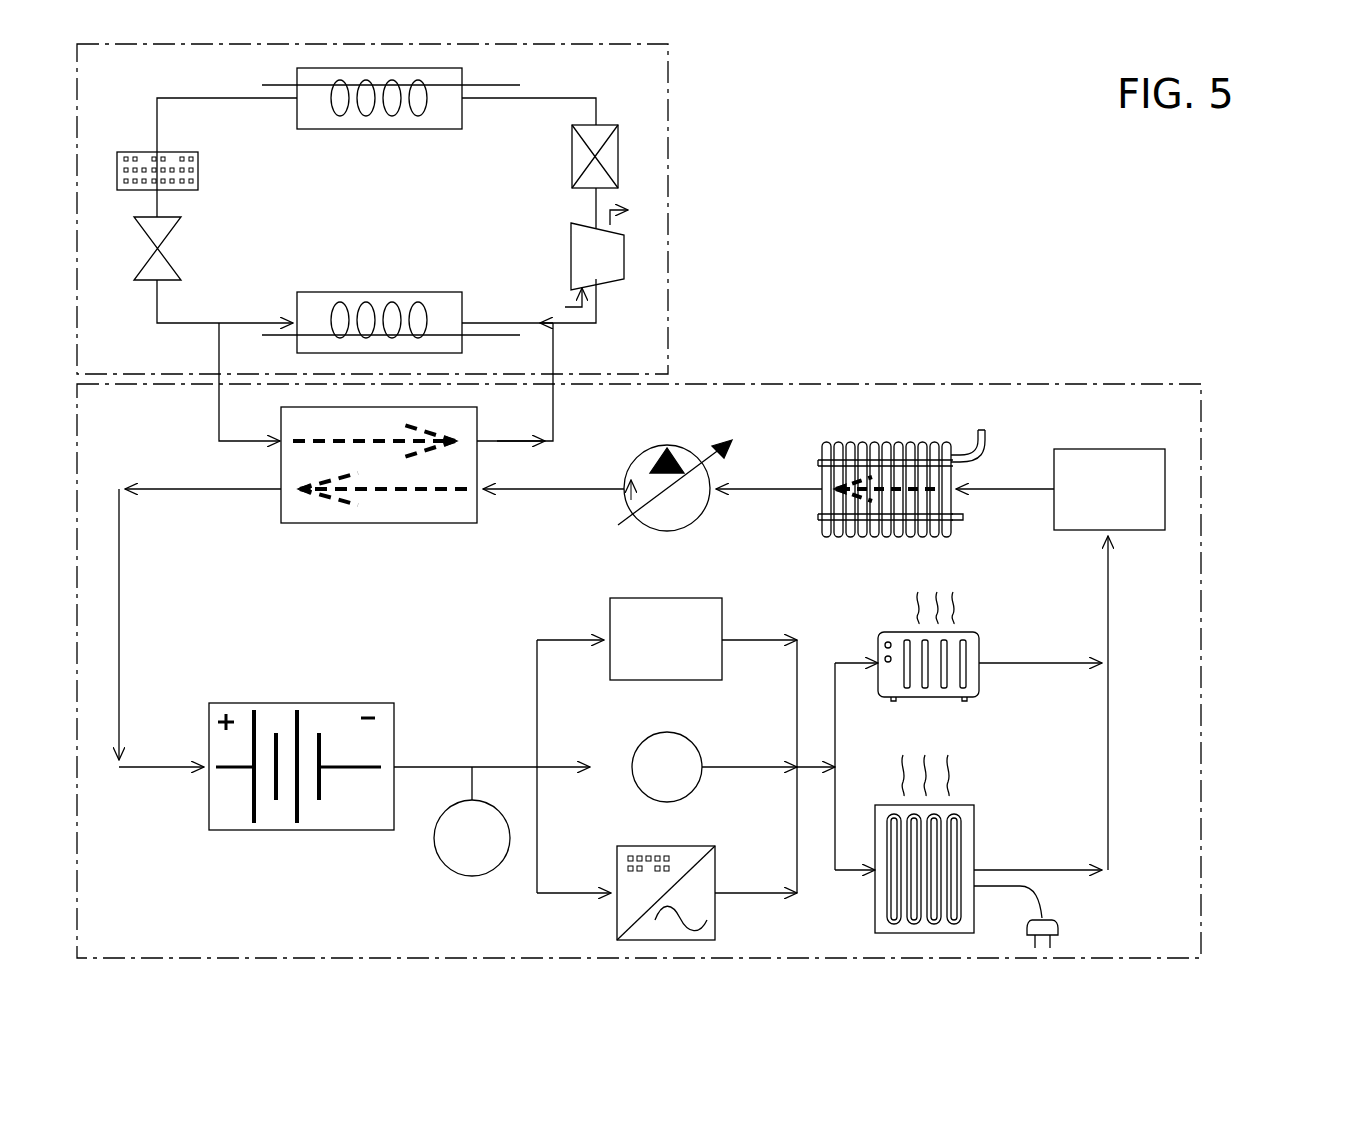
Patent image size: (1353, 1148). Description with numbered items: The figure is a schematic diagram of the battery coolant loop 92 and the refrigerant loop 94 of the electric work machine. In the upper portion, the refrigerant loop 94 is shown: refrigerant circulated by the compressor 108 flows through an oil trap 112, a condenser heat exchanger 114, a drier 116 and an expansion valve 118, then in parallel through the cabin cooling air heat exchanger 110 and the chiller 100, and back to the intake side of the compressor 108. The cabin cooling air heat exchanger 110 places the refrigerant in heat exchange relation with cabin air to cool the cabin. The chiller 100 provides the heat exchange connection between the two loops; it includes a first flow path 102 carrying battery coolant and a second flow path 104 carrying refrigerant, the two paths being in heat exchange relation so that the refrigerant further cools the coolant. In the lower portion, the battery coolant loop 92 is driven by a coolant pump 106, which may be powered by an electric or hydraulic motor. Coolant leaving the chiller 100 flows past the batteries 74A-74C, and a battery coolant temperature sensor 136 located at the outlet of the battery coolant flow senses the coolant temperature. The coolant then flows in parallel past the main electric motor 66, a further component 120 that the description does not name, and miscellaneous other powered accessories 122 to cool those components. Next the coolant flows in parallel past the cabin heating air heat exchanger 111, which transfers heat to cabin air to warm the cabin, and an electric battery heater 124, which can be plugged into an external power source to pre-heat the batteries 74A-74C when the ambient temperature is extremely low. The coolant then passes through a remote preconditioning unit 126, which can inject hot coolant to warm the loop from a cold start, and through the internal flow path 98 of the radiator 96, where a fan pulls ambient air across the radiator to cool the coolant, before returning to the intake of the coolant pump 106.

The battery coolant loop 92 is at (1212, 840).
The refrigerant loop 94 is at (718, 80).
The radiator 96 is at (908, 445).
The internal flow path 98 is at (878, 478).
The chiller 100 is at (355, 523).
The first flow path 102 is at (405, 492).
The second flow path 104 is at (330, 441).
The coolant pump 106 is at (696, 506).
The compressor 108 is at (571, 258).
The cabin cooling air heat exchanger 110 is at (400, 292).
The cabin heating air heat exchanger 111 is at (979, 652).
The oil trap 112 is at (572, 170).
The condenser heat exchanger 114 is at (332, 130).
The drier 116 is at (198, 176).
The expansion valve 118 is at (178, 262).
The inverter 120 is at (700, 847).
The miscellaneous other powered accessories 122 is at (643, 652).
The electric battery heater 124 is at (974, 830).
The remote preconditioning unit 126 is at (1086, 502).
The battery coolant temperature sensor 136 is at (451, 851).
The electric motor 66 is at (699, 747).
The batteries 74A-74C is at (230, 830).